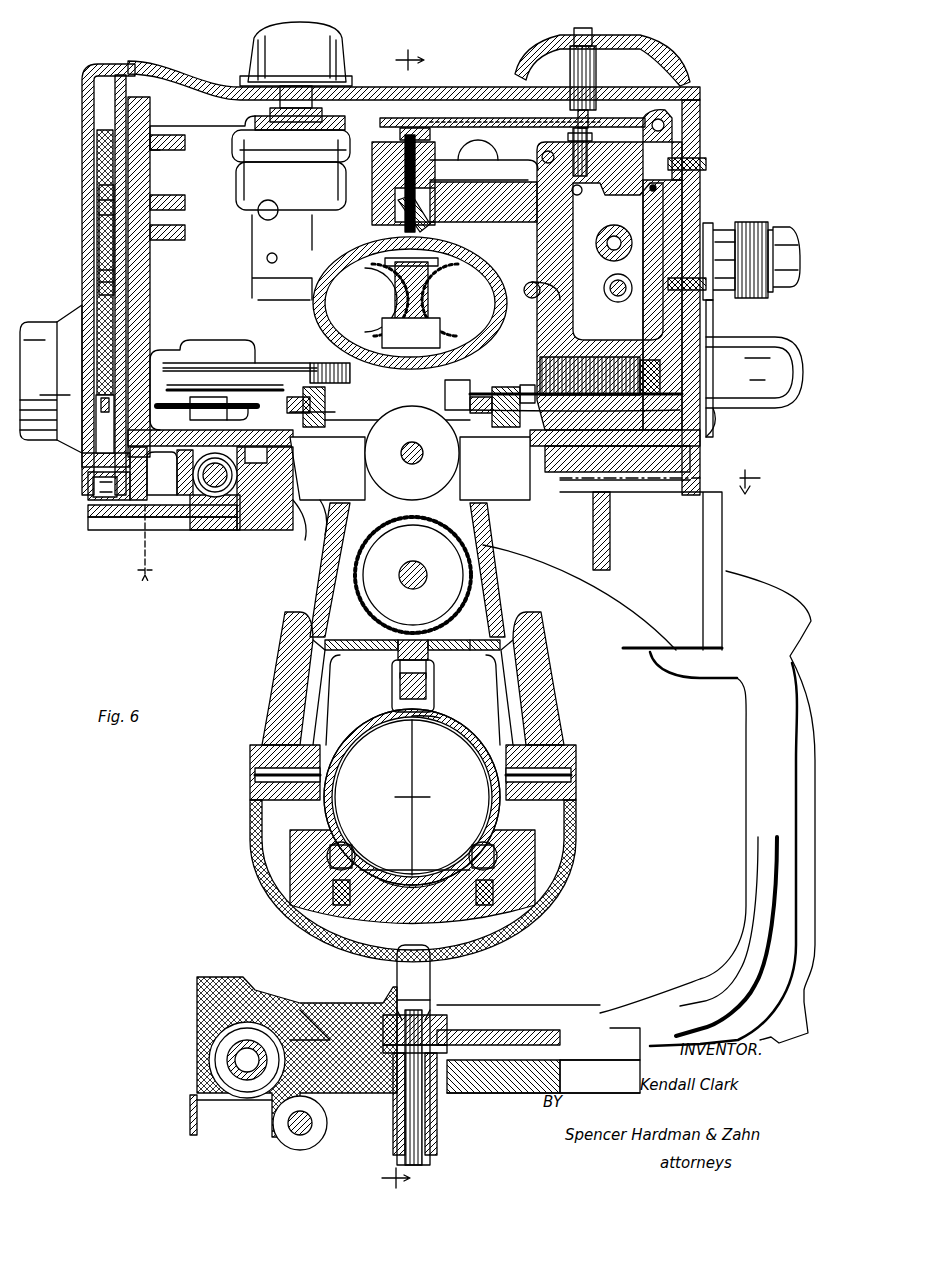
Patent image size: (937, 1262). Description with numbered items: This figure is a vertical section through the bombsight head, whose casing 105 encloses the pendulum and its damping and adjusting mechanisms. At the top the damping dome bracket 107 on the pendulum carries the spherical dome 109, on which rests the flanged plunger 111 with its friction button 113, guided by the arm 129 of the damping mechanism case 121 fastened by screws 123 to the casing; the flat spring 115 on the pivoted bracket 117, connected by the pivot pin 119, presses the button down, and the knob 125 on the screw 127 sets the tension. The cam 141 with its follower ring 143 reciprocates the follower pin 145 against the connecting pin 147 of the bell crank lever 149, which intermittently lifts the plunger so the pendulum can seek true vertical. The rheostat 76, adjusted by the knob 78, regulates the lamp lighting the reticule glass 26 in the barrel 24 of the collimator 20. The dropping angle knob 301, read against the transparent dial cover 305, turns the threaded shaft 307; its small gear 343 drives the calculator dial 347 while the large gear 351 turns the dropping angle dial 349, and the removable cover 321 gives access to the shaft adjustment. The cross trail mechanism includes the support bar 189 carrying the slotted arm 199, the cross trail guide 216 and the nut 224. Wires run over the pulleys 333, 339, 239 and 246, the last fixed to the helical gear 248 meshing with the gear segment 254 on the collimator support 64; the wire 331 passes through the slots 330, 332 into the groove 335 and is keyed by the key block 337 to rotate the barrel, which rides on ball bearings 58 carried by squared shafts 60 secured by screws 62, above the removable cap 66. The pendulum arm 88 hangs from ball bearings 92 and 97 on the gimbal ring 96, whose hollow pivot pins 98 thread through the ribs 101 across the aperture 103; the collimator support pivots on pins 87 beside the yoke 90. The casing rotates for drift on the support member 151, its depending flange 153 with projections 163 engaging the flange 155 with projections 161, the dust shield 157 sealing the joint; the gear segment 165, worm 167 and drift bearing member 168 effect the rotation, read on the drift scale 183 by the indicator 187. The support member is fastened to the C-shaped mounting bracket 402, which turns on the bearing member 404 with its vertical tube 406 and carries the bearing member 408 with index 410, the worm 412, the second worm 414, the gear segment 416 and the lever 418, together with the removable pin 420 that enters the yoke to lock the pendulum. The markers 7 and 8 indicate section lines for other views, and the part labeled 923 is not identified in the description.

The casing 105 is at (700, 200).
The calculator dial 347 is at (97, 64).
The transparent dial cover 305 is at (110, 62).
The large gear 351 is at (124, 72).
The dropping angle dial 349 is at (98, 230).
The small gear 343 is at (111, 424).
The dropping angle knob 301 is at (40, 322).
The knob 78 is at (255, 45).
The flanged plunger 111 is at (378, 128).
The flat spring 115 is at (432, 118).
The pivoted bracket 117 is at (540, 120).
The section line 8 is at (402, 611).
The rheostat 76 is at (242, 184).
The spherical surfaced dome 109 is at (355, 250).
The arm 129 is at (372, 205).
The friction button 113 is at (392, 230).
The knob 125 is at (655, 55).
The screw 127 is at (570, 60).
The pivot pin 119 is at (690, 115).
The damping mechanism case 121 is at (688, 150).
The screws 123 is at (706, 165).
The bell crank lever 149 is at (540, 270).
The connecting pin 147 is at (536, 296).
The eccentric or cam 141 is at (620, 258).
The follower ring 143 is at (632, 291).
The follower pin 145 is at (598, 302).
The removable cover 321 is at (802, 405).
The damping dome bracket 107 is at (318, 300).
The cross trail alignment slotted arm 199 is at (378, 300).
The cross trail guide member 216 is at (430, 300).
The nut 224 is at (411, 287).
The vertical rectangular support bar 189 is at (411, 333).
The worm 923 is at (475, 376).
The ball bearings 92 is at (563, 385).
The pulley 333 is at (575, 418).
The threaded shaft 307 is at (175, 370).
The pulley 339 is at (247, 417).
The hollow pivot pins 98 is at (300, 380).
The ball bearings 97 is at (411, 407).
The rectangular gimbal ring 96 is at (520, 420).
The ribs 101 is at (298, 415).
The large aperture 103 is at (397, 433).
The projections 161 is at (530, 455).
The depending circular flange 153 is at (555, 470).
The projections 163 is at (630, 481).
The section line 7 is at (430, 525).
The drift bearing member 168 is at (182, 500).
The gear segment 165 is at (222, 496).
The worm 167 is at (213, 490).
The drift scale 183 is at (88, 490).
The indicator 187 is at (85, 514).
The upwardly extending circular flange 155 is at (310, 520).
The dust shield 157 is at (326, 524).
The pulley 246 is at (413, 575).
The pulley 239 is at (415, 503).
The support member 151 is at (560, 568).
The pendulum arm 88 is at (288, 628).
The pivot pins 87 is at (252, 797).
The yoke 90 is at (264, 895).
The removable cap member 66 is at (412, 920).
The barrel 24 is at (380, 740).
The reticule glass 26 is at (412, 797).
The collimator 20 is at (432, 722).
The helical gear 248 is at (412, 635).
The slot 332 is at (462, 634).
The helical gear segment 254 is at (398, 650).
The slot 330 is at (413, 700).
The wire 331 is at (421, 678).
The collimator support 64 is at (428, 686).
The ball bearings 58 is at (413, 770).
The squared shafts 60 is at (400, 688).
The screws 62 is at (340, 900).
The groove 335 is at (412, 887).
The grooved key block 337 is at (415, 880).
The C-shaped mounting bracket 402 is at (745, 790).
The bearing member 408 is at (197, 1052).
The second worm 414 is at (262, 1097).
The gear segment 416 is at (285, 1092).
The worm 412 is at (327, 1128).
The index member 410 is at (192, 1137).
The bearing member 404 is at (455, 1095).
The lever 418 is at (530, 1093).
The removable pin 420 is at (397, 968).
The vertical tube 406 is at (440, 1138).